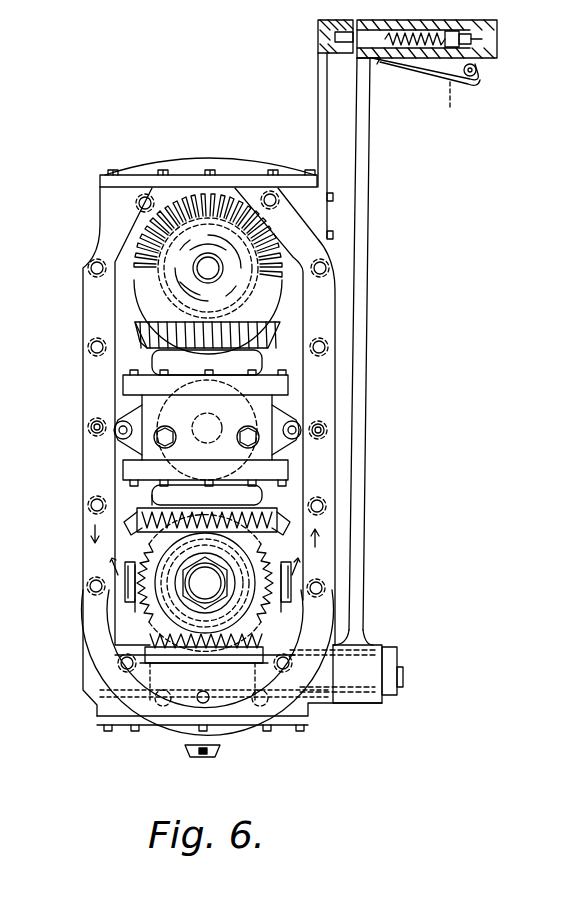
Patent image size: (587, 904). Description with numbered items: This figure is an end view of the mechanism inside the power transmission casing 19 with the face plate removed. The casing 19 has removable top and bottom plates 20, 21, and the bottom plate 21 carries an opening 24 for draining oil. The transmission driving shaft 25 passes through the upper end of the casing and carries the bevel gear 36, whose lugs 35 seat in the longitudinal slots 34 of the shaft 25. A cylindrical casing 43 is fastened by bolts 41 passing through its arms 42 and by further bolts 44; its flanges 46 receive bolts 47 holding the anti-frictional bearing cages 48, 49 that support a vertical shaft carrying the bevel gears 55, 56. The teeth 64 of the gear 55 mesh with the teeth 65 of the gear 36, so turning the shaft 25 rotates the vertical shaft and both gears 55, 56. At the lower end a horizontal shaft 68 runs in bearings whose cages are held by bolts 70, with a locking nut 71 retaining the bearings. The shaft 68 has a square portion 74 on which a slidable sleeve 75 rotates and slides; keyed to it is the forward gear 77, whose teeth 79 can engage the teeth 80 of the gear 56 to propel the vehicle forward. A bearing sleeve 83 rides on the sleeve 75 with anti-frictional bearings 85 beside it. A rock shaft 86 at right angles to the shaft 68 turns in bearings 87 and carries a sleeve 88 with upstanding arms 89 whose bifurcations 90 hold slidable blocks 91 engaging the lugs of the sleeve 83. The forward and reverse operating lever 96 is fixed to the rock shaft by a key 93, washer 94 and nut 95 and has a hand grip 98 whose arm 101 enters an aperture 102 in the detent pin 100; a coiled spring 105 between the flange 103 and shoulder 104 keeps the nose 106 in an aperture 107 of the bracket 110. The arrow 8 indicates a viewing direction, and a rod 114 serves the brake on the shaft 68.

The section line arrows 8 is at (204, 550).
The casing 19 is at (340, 360).
The top removable plate 20 is at (197, 160).
The bottom removable plate 21 is at (157, 740).
The opening 24 is at (206, 757).
The transmission driving shaft 25 is at (208, 268).
The longitudinal slots 34 is at (238, 252).
The lugs 35 is at (222, 236).
The bevel gear 36 is at (165, 250).
The bolts 41 is at (114, 432).
The arms 42 is at (120, 445).
The cylindrical casing 43 is at (280, 462).
The bolts 44 is at (249, 425).
The flanges 46 is at (290, 470).
The bolts 47 is at (135, 375).
The anti-frictional bearing cage 48 is at (262, 360).
The anti-frictional bearing cage 49 is at (262, 500).
The bevel gear 55 is at (268, 326).
The bevel gear 56 is at (278, 522).
The teeth 64 is at (147, 328).
The teeth 65 is at (262, 266).
The horizontal shaft 68 is at (205, 583).
The bolts 70 is at (186, 286).
The locking nut 71 is at (300, 412).
The square portion 74 is at (150, 520).
The slidable sleeve 75 is at (140, 598).
The forward gear 77 is at (195, 650).
The teeth 79 is at (270, 652).
The teeth 80 is at (288, 530).
The anti-frictional bearing sleeve 83 is at (290, 632).
The anti-frictional bearings 85 is at (152, 505).
The rock shaft 86 is at (95, 700).
The bearings 87 is at (100, 683).
The sleeve 88 is at (195, 673).
The upstanding arms 89 is at (200, 612).
The bifurcations 90 is at (125, 590).
The slidable blocks 91 is at (125, 576).
The key 93 is at (362, 648).
The washer 94 is at (390, 650).
The nut 95 is at (395, 697).
The forward and reverse operating lever 96 is at (366, 190).
The hand grip 98 is at (430, 78).
The detent pin 100 is at (497, 42).
The arm 101 is at (478, 72).
The aperture 102 is at (457, 103).
The annular flange 103 is at (400, 31).
The shoulder 104 is at (468, 30).
The coiled spring 105 is at (445, 31).
The nose 106 is at (368, 62).
The aperture 107 is at (318, 36).
The bracket 110 is at (318, 96).
The rod 114 is at (170, 426).